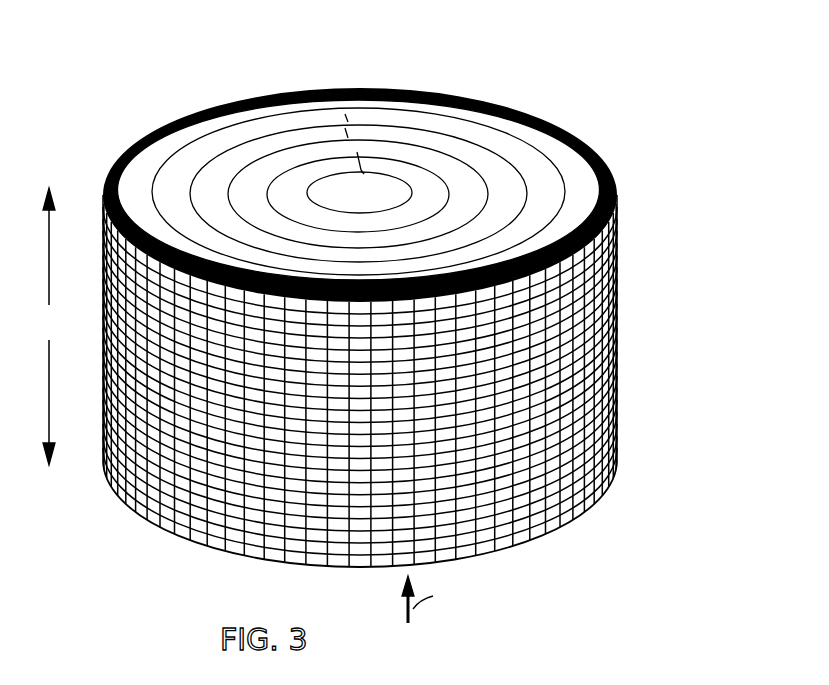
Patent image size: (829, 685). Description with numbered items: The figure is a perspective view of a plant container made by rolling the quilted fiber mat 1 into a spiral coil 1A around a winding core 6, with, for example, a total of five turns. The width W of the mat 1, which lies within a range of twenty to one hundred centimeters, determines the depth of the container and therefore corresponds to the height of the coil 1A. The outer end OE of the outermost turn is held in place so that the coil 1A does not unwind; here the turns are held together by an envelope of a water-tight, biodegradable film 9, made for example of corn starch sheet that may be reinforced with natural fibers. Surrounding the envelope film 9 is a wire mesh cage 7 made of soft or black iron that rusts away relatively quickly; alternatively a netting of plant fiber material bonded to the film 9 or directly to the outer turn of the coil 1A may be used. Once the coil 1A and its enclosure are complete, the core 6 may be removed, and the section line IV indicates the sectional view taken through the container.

The mat 1 is at (378, 285).
The coil 1A is at (451, 150).
The winding core 6 is at (362, 188).
The wire mesh cage 7 is at (143, 488).
The film 9 is at (163, 121).
The outer end OE is at (258, 104).
The width W is at (50, 326).
The section line IV is at (434, 599).